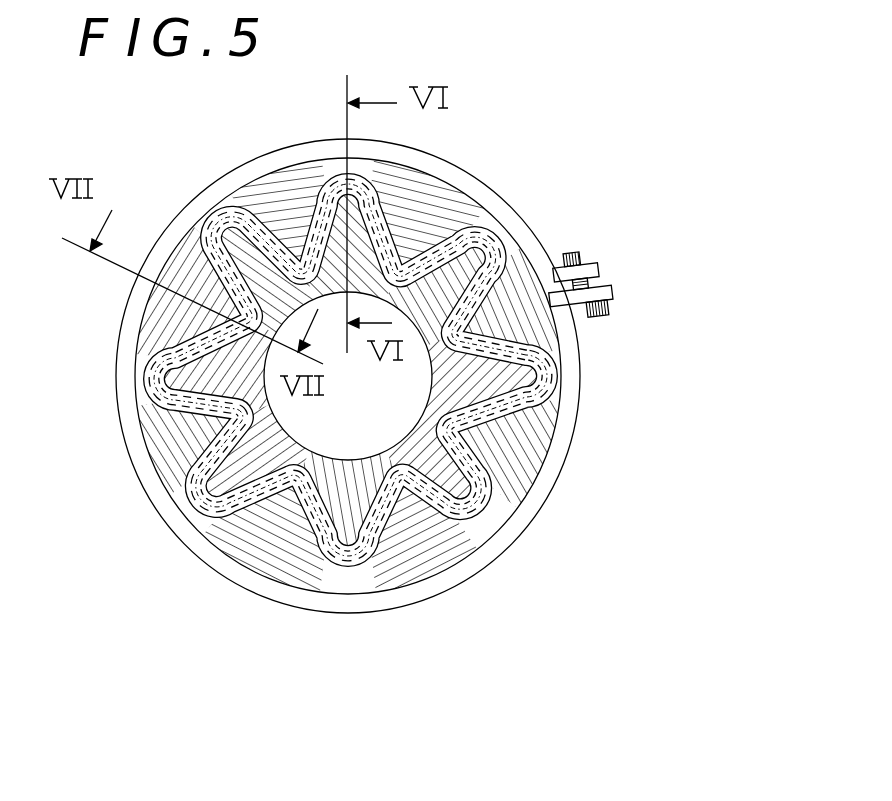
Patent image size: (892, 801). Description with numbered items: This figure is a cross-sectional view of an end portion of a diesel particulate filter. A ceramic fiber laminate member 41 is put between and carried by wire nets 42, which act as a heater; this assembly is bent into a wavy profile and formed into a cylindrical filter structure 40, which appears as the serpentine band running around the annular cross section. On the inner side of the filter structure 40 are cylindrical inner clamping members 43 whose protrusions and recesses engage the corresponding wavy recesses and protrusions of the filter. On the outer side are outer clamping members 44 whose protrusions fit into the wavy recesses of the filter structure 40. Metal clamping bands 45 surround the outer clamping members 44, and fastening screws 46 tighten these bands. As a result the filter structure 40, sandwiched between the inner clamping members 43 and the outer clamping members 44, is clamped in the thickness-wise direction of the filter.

The cylindrical filter structure 40 is at (350, 577).
The ceramic fiber laminate member 41 is at (405, 540).
The wire nets 42 is at (320, 566).
The cylindrical inner clamping members 43 is at (197, 505).
The outer clamping members 44 is at (530, 457).
The metal clamping bands 45 is at (483, 188).
The fastening screws 46 is at (602, 320).